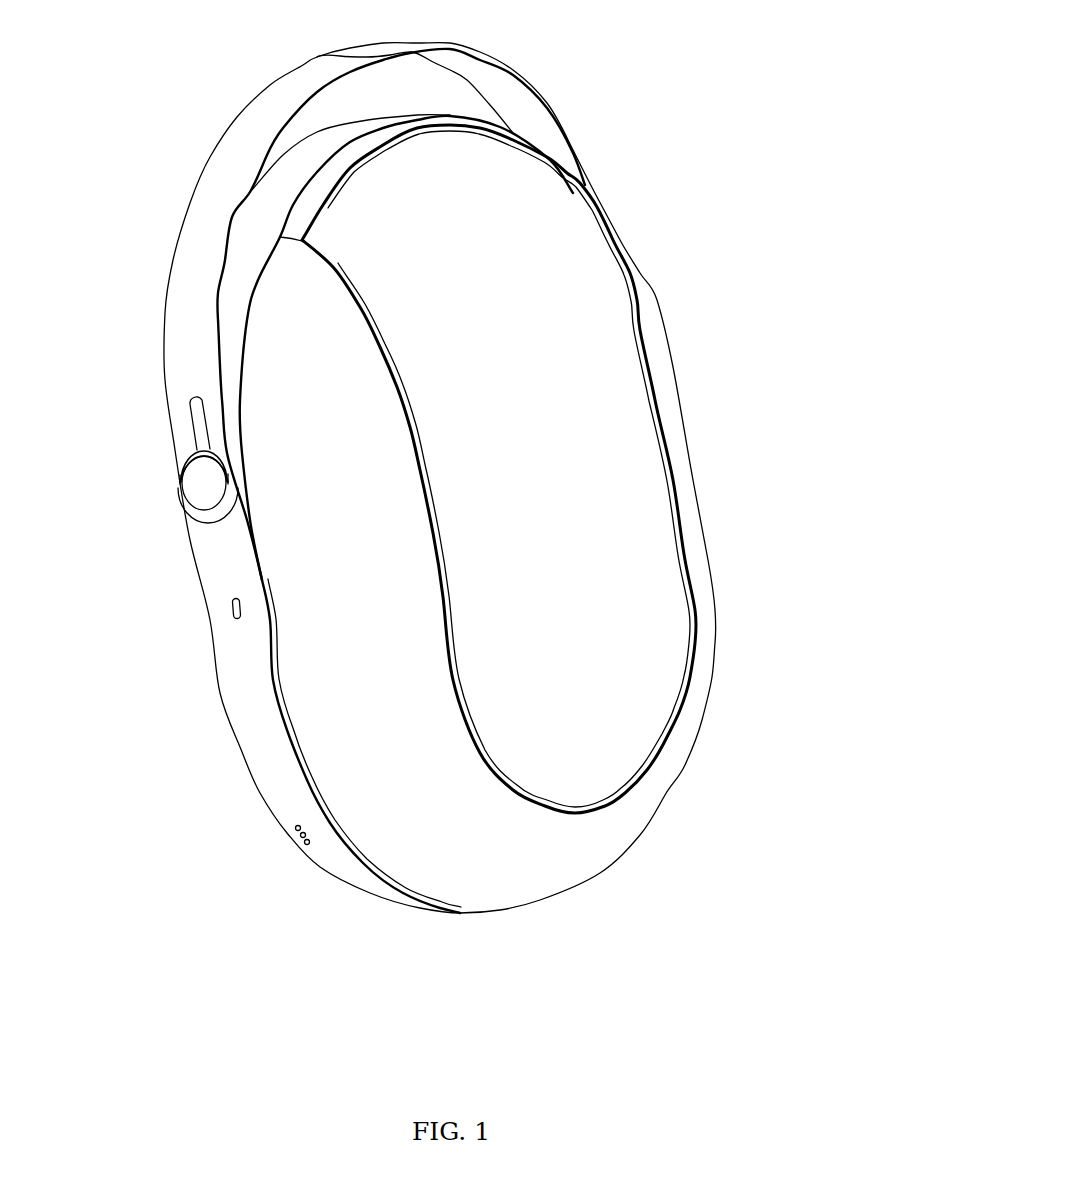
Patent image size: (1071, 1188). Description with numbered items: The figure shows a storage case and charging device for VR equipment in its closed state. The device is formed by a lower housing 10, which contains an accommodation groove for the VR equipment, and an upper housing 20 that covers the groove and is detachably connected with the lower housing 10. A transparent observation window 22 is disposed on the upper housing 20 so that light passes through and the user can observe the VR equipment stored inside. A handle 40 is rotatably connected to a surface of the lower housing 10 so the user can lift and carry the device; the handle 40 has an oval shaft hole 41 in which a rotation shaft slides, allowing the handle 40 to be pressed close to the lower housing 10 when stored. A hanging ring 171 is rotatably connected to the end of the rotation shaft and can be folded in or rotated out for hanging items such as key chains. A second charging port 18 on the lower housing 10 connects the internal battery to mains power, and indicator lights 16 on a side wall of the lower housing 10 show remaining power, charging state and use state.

The lower housing 10 is at (233, 767).
The indicator light 16 is at (300, 849).
The second charging port 18 is at (227, 607).
The upper housing 20 is at (540, 853).
The transparent observation window 22 is at (630, 538).
The handle 40 is at (503, 90).
The shaft hole 41 is at (203, 417).
The hanging ring 171 is at (190, 457).